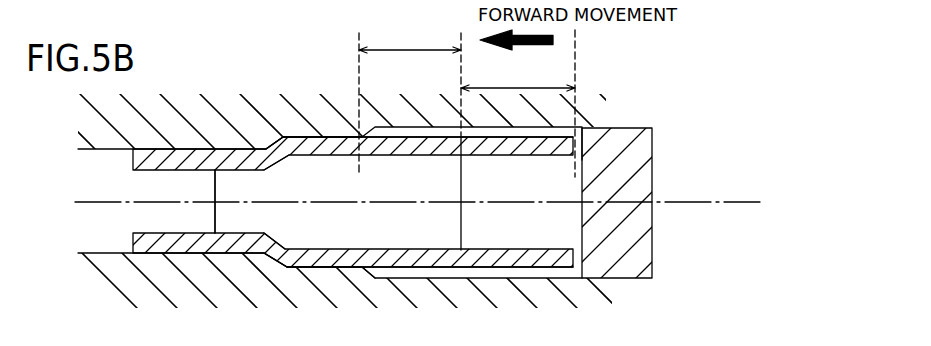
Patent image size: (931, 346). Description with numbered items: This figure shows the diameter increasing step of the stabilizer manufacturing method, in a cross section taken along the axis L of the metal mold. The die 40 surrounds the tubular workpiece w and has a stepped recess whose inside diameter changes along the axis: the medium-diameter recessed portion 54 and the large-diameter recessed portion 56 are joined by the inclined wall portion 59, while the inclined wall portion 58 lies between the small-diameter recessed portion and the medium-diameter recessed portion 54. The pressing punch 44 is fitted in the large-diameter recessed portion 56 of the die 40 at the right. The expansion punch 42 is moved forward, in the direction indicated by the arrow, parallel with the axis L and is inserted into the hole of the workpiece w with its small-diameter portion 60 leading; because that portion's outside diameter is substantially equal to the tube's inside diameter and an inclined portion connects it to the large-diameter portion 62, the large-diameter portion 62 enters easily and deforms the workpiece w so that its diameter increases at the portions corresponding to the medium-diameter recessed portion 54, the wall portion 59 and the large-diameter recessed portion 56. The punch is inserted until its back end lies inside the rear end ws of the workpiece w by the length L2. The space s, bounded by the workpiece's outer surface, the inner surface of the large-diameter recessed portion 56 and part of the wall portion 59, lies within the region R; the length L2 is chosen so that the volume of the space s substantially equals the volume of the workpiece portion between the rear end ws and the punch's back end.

The die 40 is at (596, 324).
The expansion punch 42 is at (313, 130).
The pressing punch 44 is at (640, 118).
The medium-diameter recessed portion 54 is at (333, 144).
The large-diameter recessed portion 56 is at (428, 270).
The wall portion 58 is at (278, 146).
The wall portion 59 is at (370, 270).
The small-diameter portion 60 is at (229, 217).
The large-diameter portion 62 is at (312, 249).
The workpiece W is at (170, 147).
The space S is at (412, 110).
The axis L is at (398, 202).
The region R is at (410, 39).
The length L2 is at (518, 78).
The rear end ws is at (584, 141).